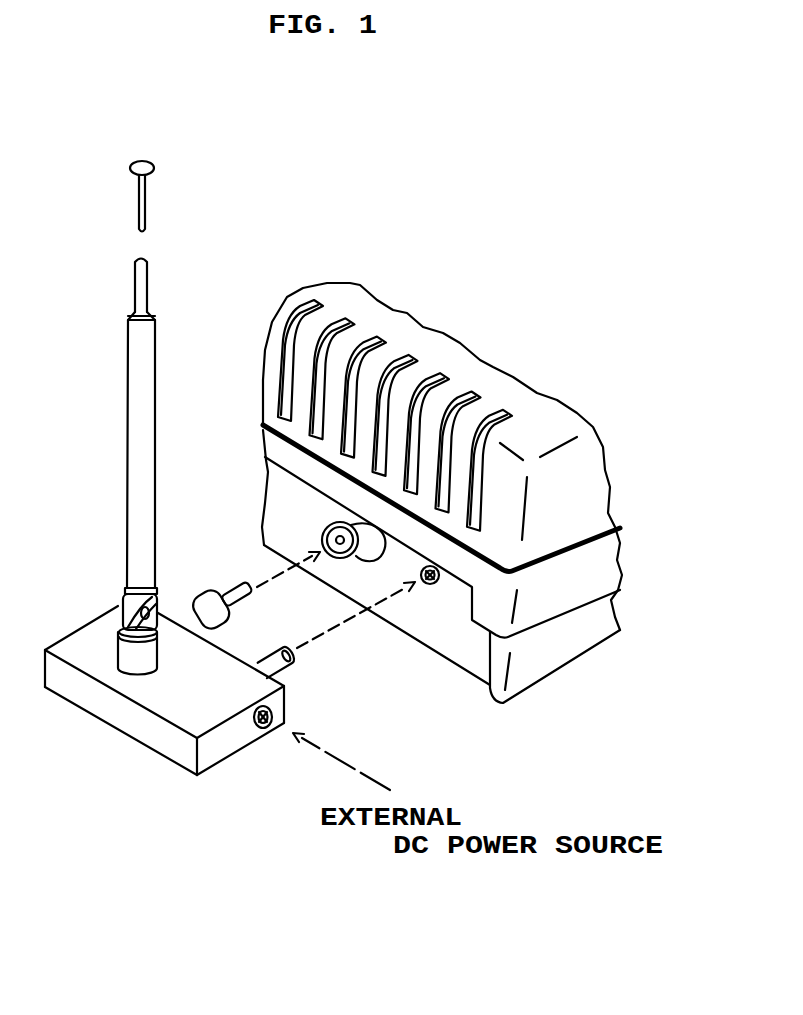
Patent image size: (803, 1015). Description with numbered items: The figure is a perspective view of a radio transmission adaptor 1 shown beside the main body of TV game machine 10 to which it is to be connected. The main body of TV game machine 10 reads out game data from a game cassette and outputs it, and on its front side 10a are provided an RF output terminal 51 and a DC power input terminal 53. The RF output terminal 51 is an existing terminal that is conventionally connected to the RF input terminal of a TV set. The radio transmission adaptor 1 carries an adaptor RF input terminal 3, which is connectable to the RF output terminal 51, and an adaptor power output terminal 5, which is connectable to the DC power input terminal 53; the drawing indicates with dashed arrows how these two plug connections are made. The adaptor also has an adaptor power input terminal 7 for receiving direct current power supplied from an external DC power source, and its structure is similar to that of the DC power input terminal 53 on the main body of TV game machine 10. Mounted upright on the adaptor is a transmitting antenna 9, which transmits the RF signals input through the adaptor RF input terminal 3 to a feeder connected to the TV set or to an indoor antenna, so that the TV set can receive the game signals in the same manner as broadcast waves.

The radio transmission adaptor 1 is at (163, 767).
The adaptor RF input terminal 3 is at (207, 611).
The adaptor power output terminal 5 is at (288, 678).
The adaptor power input terminal 7 is at (261, 727).
The transmitting antennae 9 is at (145, 370).
The main body of TV game machine 10 is at (540, 432).
The front side of the main body of TV game machine 10a is at (470, 638).
The RF output terminal 51 is at (347, 518).
The DC power input terminal 53 is at (433, 585).